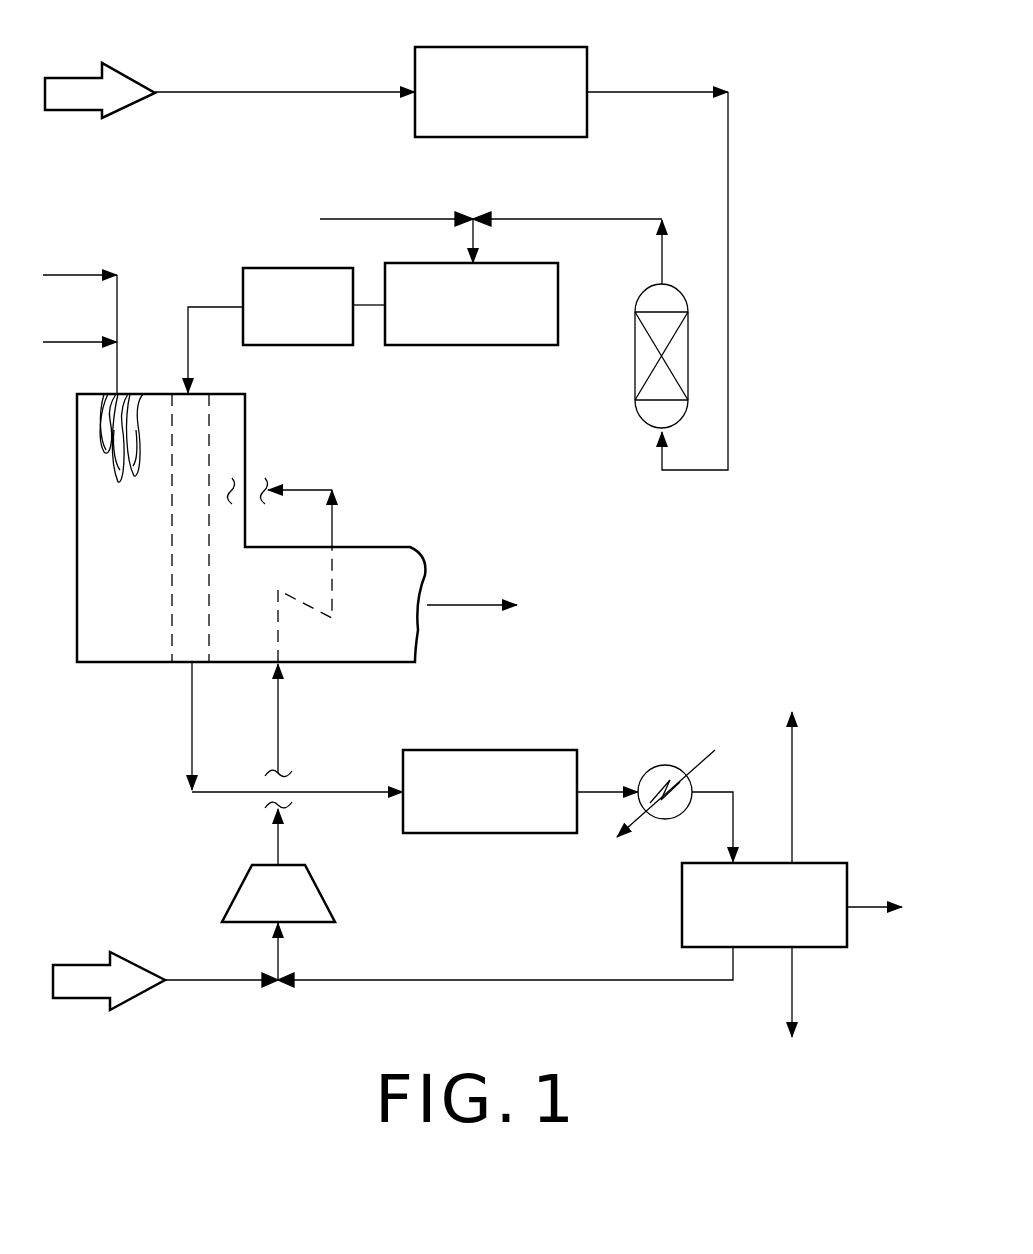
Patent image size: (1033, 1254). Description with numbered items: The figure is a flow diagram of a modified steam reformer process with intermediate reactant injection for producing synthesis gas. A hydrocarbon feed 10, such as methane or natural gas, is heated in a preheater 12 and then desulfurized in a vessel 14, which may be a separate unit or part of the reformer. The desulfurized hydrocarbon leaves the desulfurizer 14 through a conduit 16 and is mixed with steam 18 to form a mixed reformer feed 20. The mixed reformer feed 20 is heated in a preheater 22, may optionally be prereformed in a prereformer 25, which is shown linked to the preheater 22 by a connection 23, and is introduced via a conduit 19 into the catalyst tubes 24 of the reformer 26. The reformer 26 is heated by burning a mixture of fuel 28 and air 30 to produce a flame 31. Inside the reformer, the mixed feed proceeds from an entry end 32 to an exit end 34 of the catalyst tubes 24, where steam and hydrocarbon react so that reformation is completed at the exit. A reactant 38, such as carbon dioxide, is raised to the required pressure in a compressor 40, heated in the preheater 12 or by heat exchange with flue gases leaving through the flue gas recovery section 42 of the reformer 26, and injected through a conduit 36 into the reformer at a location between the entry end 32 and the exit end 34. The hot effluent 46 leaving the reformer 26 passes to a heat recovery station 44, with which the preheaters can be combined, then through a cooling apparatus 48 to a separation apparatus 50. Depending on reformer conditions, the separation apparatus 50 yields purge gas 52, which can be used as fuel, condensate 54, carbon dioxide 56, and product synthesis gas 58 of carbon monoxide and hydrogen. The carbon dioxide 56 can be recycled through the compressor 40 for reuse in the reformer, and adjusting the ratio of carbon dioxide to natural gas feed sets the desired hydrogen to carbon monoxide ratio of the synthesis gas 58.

The hydrocarbon feed 10 is at (133, 105).
The preheater 12 is at (415, 58).
The desulfurizer vessel 14 is at (633, 388).
The conduit 16 is at (668, 236).
The steam 18 is at (352, 218).
The conduit 19 is at (188, 320).
The mixed reformer feed 20 is at (478, 235).
The preheater 22 is at (478, 345).
The signal line 23 is at (368, 307).
The catalyst tubes 24 is at (170, 485).
The prereformer 25 is at (278, 268).
The reformer 26 is at (108, 668).
The fuel 28 is at (104, 272).
The air 30 is at (68, 341).
The flame 31 is at (140, 394).
The entry end 32 is at (212, 394).
The exit end 34 is at (172, 664).
The conduit 36 is at (216, 490).
The reactant 38 is at (140, 993).
The compressor 40 is at (322, 890).
The flue gas recovery section 42 is at (405, 547).
The heat recovery station 44 is at (455, 750).
The effluent 46 is at (192, 762).
The cooling apparatus 48 is at (662, 767).
The separation apparatus 50 is at (682, 897).
The purge gas 52 is at (792, 802).
The condensate 54 is at (792, 978).
The carbon dioxide 56 is at (583, 980).
The product synthesis gas 58 is at (858, 910).